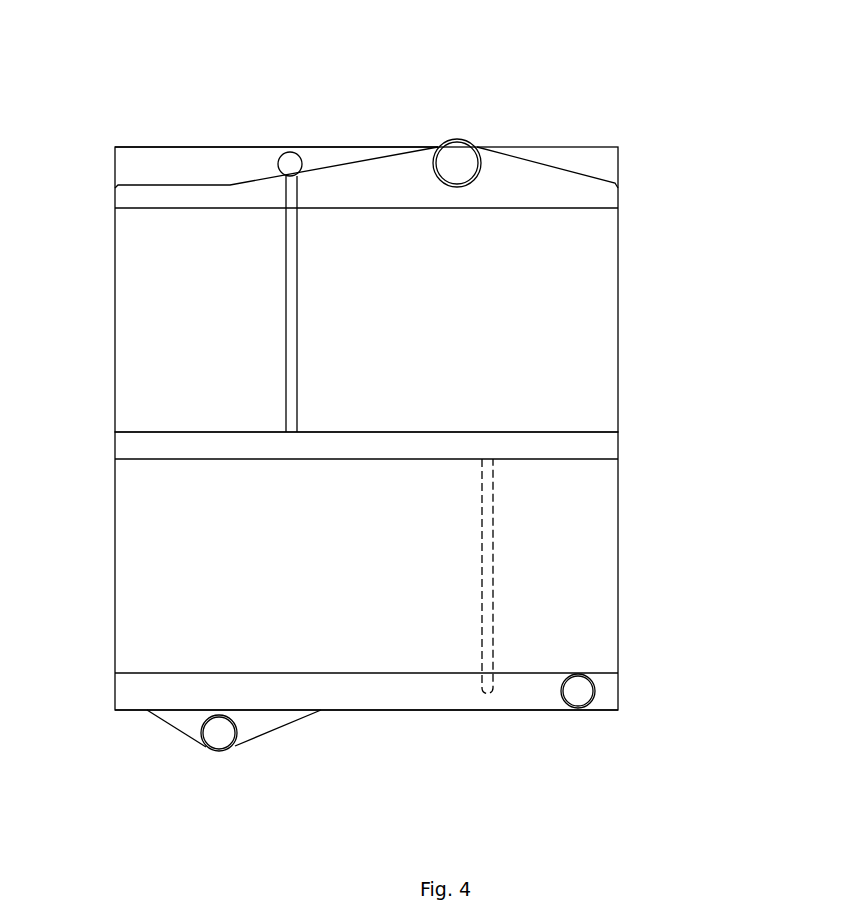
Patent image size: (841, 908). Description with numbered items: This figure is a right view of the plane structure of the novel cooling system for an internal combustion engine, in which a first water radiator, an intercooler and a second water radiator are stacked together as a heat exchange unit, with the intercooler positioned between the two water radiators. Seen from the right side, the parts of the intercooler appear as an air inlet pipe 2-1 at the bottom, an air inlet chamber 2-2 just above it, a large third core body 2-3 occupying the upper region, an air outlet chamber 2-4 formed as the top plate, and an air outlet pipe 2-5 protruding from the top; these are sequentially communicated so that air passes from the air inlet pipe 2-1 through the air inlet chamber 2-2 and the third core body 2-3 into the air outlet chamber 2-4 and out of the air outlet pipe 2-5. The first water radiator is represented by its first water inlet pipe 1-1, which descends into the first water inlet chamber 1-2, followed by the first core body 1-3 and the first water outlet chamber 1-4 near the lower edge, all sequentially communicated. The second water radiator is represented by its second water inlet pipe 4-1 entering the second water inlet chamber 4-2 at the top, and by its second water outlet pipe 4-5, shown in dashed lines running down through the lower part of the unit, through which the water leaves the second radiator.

The first water inlet pipe 1-1 is at (355, 304).
The first water inlet chamber 1-2 is at (402, 571).
The first core body 1-3 is at (402, 649).
The first water outlet chamber 1-4 is at (621, 721).
The air inlet pipe 2-1 is at (145, 756).
The air inlet chamber 2-2 is at (267, 772).
The third core body 2-3 is at (416, 289).
The air outlet chamber 2-4 is at (366, 111).
The air outlet pipe 2-5 is at (485, 130).
The second water inlet pipe 4-1 is at (252, 92).
The second water inlet chamber 4-2 is at (276, 121).
The second water outlet pipe 4-5 is at (388, 576).